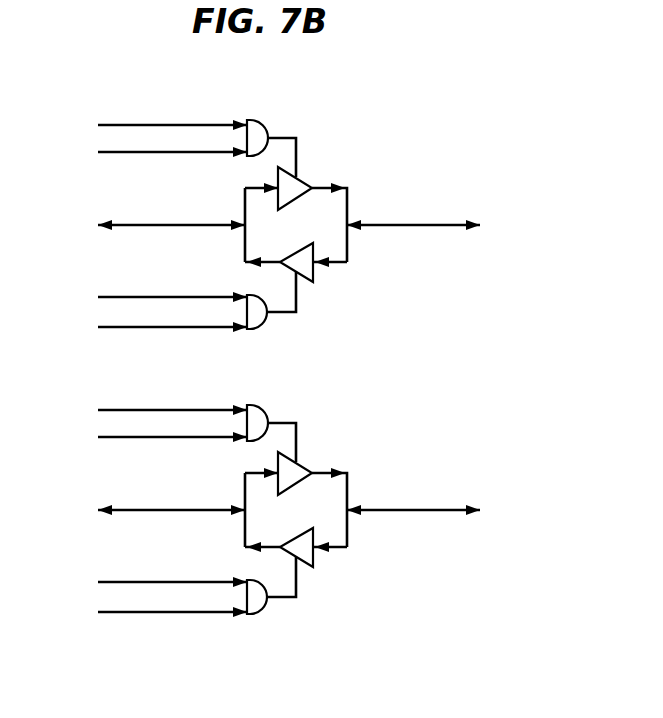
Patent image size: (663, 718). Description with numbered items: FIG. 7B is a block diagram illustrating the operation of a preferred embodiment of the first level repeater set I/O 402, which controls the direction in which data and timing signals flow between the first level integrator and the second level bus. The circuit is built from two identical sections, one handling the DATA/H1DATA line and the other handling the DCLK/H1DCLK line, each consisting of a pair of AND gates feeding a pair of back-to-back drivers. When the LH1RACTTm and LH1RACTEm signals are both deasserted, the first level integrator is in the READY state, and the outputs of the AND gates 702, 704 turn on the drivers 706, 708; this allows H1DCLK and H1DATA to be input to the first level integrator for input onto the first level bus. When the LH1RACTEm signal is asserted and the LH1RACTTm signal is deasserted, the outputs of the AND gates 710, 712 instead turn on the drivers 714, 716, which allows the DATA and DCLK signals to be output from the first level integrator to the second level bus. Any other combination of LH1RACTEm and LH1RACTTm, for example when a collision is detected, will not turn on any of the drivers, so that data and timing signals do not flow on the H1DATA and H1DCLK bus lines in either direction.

The first level repeater set I/O 402 is at (393, 94).
The AND gate 702 is at (268, 602).
The AND gate 704 is at (268, 317).
The driver 706 is at (316, 553).
The driver 708 is at (316, 268).
The AND gate 710 is at (268, 418).
The AND gate 712 is at (268, 133).
The driver 714 is at (306, 467).
The driver 716 is at (306, 182).